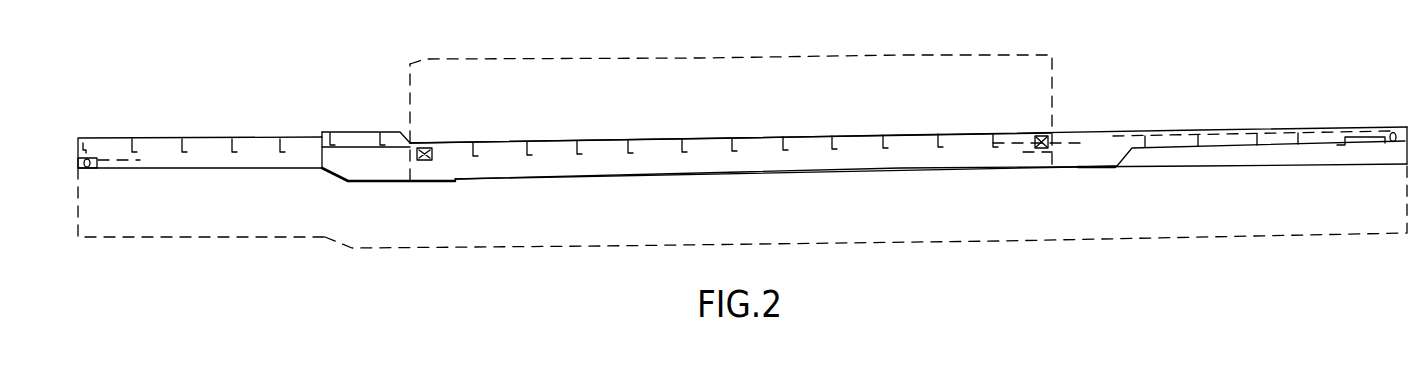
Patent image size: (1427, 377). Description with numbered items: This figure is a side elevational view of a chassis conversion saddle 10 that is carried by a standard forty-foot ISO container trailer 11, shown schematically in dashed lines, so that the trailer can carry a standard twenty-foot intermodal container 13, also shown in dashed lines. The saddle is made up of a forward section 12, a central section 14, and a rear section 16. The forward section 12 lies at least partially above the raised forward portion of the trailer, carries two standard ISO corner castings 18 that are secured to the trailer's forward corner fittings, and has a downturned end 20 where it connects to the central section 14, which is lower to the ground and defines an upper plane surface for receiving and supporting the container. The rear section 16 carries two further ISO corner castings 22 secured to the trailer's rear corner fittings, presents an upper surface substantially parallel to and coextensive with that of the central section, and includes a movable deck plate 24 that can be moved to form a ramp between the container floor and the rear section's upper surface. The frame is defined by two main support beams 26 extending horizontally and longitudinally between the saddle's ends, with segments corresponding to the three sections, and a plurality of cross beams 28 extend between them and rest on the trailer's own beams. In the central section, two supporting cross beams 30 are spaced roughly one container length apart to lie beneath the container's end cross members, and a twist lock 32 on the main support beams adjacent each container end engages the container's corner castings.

The chassis conversion saddle 10 is at (643, 113).
The ISO container trailer 11 is at (165, 237).
The forward section 12 is at (219, 116).
The intermodal container 13 is at (415, 73).
The central section 14 is at (740, 121).
The rear section 16 is at (1268, 111).
The ISO corner castings 18 is at (89, 167).
The downturned end 20 is at (328, 191).
The ISO corner castings 22 is at (1393, 143).
The movable deck plate 24 is at (1141, 131).
The main support beams 26 is at (624, 177).
The cross beams 28 is at (183, 140).
The supporting cross beams 30 is at (412, 170).
The twist lock 32 is at (425, 147).